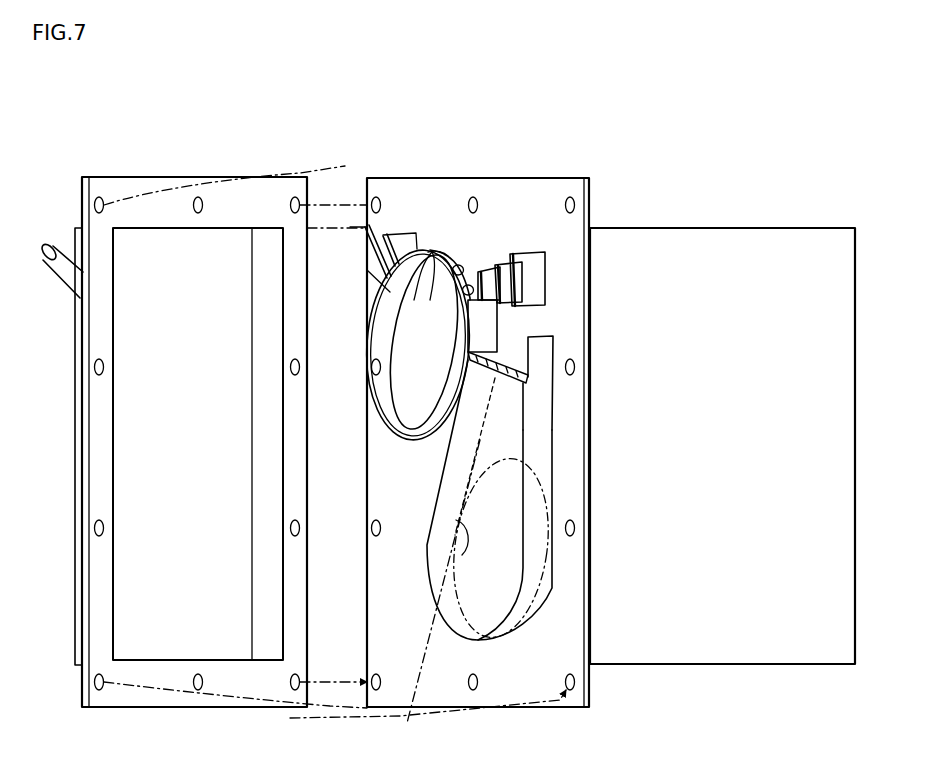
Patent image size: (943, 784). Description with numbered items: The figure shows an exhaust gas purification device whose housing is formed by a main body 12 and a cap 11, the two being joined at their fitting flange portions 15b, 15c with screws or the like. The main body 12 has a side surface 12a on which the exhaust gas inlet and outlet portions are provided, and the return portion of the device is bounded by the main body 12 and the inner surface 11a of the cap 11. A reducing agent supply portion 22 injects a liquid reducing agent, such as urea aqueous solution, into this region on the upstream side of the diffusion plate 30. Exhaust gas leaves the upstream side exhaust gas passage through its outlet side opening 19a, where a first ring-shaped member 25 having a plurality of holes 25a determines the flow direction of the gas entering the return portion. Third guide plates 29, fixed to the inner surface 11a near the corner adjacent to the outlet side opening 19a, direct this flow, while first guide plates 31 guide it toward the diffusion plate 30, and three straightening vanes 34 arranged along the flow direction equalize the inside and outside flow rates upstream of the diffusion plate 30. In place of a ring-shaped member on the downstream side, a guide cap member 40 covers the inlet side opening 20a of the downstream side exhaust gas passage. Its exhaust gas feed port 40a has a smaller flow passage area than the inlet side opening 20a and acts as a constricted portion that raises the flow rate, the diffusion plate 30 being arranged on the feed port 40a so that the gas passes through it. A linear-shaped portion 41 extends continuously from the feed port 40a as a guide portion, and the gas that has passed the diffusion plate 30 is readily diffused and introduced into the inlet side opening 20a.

The cap 11 is at (160, 172).
The inner surface of the cap 11a is at (188, 602).
The main body 12 is at (665, 172).
The side surface of the main body 12a is at (412, 565).
The fitting flange portion 15b is at (138, 685).
The fitting flange portion 15c is at (458, 690).
The outlet side opening 19a is at (440, 256).
The reducing agent supply portion 22 is at (61, 283).
The first ring-shaped member 25 is at (372, 352).
The holes 25a is at (452, 280).
The third guide plates 29 is at (401, 252).
The diffusion plate 30 is at (552, 358).
The first guide plates 31 is at (548, 345).
The straightening vanes 34 is at (530, 255).
The guide cap member 40 is at (495, 598).
The exhaust gas feed port 40a is at (506, 384).
The linear-shaped portion 41 is at (535, 427).
The inlet side opening 20a is at (439, 571).